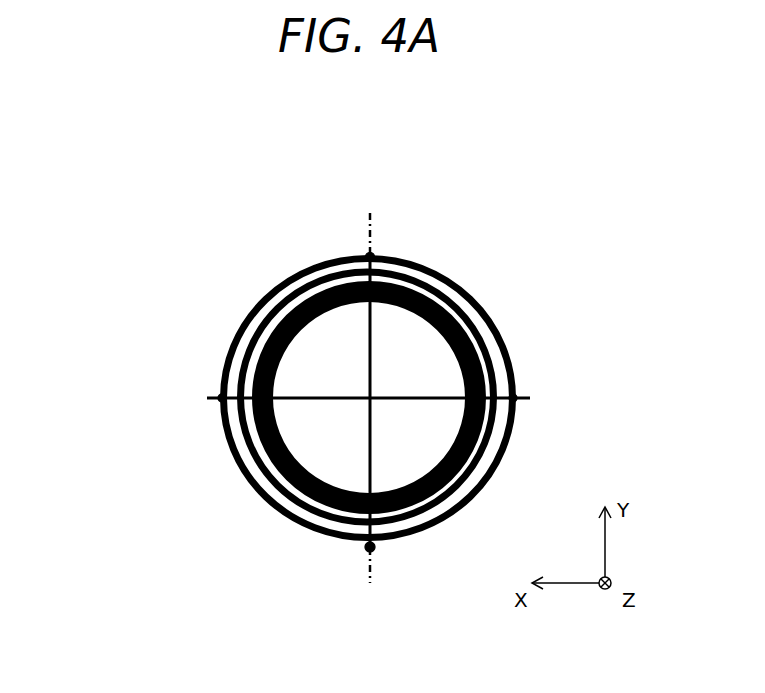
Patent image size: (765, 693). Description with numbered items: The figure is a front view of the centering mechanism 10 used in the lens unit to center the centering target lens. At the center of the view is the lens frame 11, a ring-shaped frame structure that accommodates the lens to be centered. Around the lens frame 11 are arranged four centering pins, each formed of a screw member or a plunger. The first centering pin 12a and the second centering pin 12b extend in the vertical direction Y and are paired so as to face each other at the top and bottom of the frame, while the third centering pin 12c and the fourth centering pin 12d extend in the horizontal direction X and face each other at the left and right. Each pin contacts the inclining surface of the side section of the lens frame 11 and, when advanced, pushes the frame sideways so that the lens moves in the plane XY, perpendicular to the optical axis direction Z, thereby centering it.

The centering mechanism 10 is at (481, 218).
The lens frame 11 is at (464, 314).
The first centering pin 12a is at (372, 256).
The second centering pin 12b is at (372, 550).
The third centering pin 12c is at (223, 398).
The fourth centering pin 12d is at (516, 397).